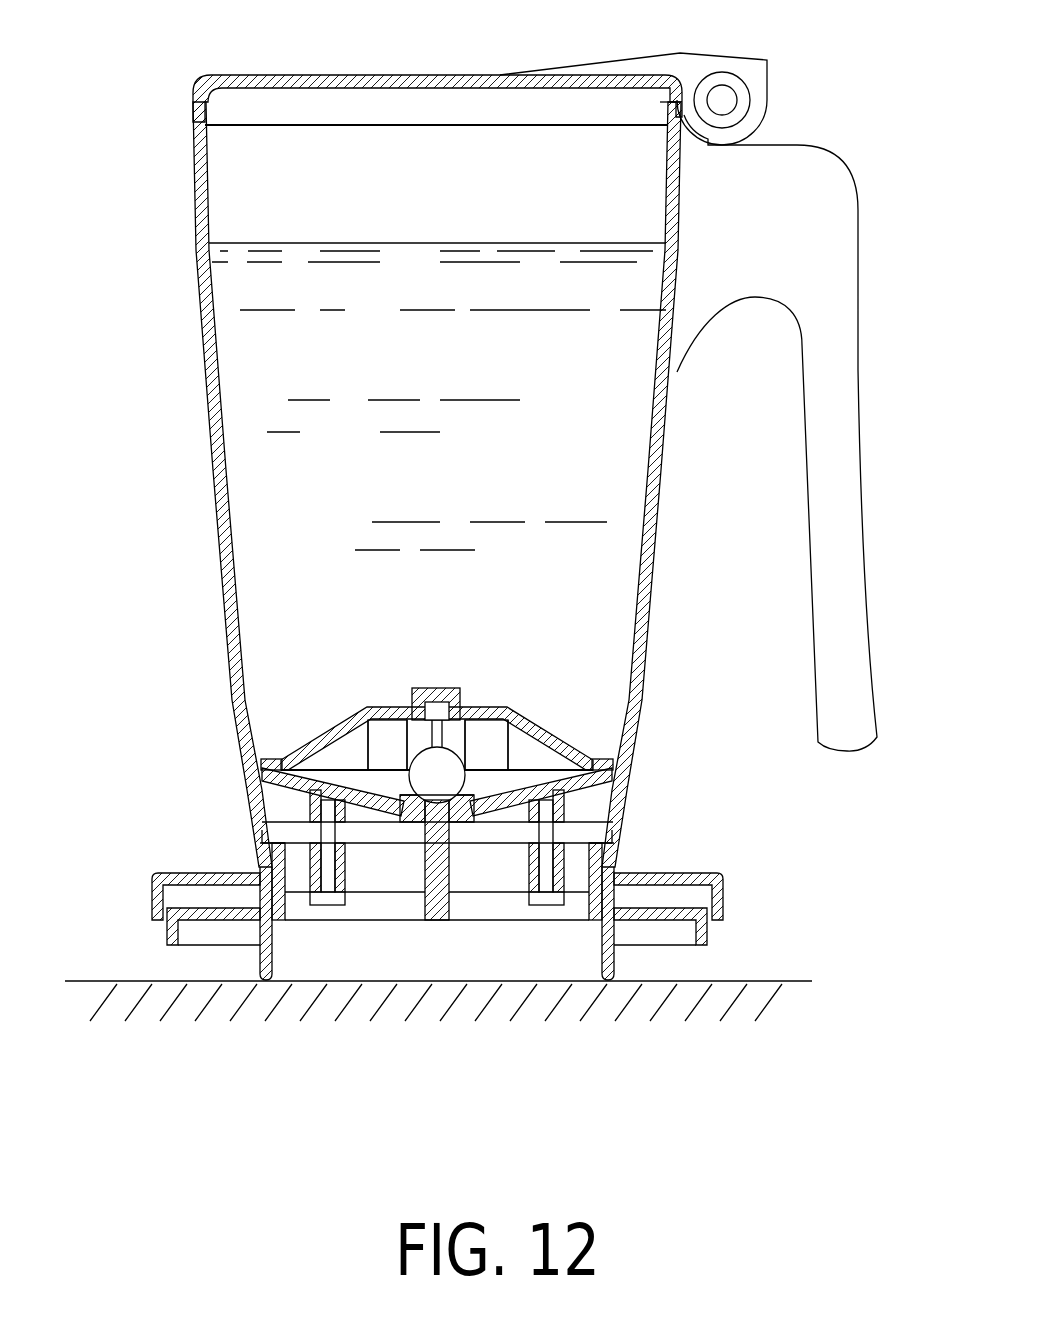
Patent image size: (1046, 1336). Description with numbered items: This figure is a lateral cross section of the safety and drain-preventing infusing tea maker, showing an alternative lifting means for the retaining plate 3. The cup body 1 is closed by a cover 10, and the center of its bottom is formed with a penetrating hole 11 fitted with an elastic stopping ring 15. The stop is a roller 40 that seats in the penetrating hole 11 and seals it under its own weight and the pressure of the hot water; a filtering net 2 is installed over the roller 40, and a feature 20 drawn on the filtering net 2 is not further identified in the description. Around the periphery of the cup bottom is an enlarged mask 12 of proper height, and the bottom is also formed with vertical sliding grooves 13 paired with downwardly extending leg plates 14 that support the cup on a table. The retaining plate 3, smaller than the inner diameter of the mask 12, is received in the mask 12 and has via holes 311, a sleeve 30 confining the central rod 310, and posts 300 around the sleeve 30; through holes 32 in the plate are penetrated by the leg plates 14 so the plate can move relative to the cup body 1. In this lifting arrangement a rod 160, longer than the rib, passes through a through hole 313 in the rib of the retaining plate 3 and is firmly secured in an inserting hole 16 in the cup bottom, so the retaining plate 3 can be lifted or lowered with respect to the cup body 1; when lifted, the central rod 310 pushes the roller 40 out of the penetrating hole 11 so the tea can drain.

The cup body 1 is at (203, 446).
The cover 10 is at (287, 75).
The filtering net 2 is at (487, 707).
The openings 20 is at (377, 747).
The roller 40 is at (425, 763).
The inserting hole 16 is at (305, 803).
The elastic stopping ring 15 is at (400, 803).
The penetrating hole 11 is at (423, 810).
The retaining plate 3 is at (707, 928).
The sleeve 30 is at (327, 897).
The posts 300 is at (265, 853).
The central rod 310 is at (448, 830).
The via holes 311 is at (387, 905).
The through hole 313 is at (312, 860).
The mask 12 is at (727, 877).
The vertical sliding grooves 13 is at (260, 833).
The leg plates 14 is at (258, 957).
The through holes 32 is at (217, 913).
The rod 160 is at (331, 898).